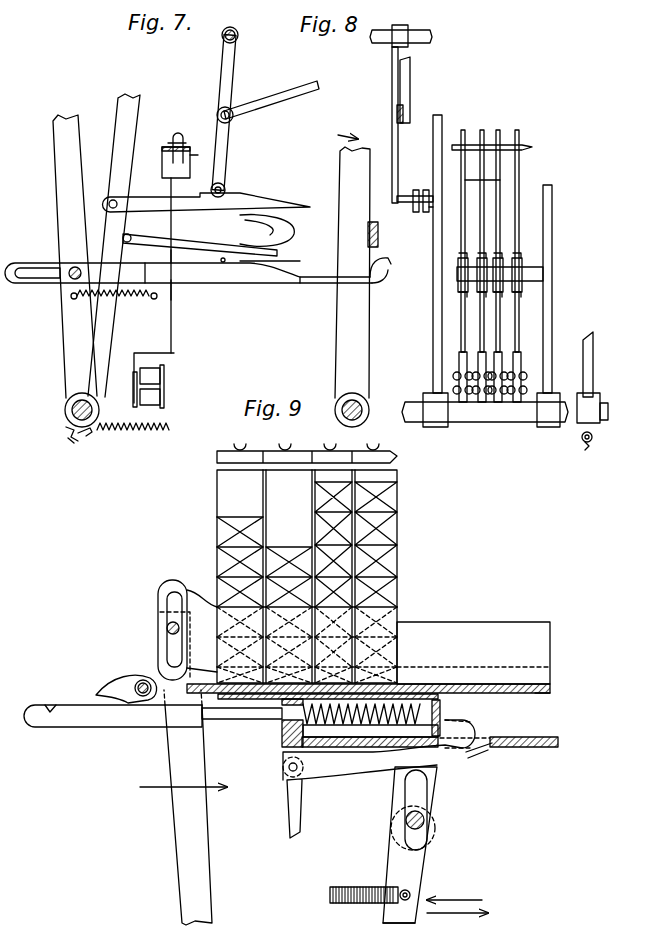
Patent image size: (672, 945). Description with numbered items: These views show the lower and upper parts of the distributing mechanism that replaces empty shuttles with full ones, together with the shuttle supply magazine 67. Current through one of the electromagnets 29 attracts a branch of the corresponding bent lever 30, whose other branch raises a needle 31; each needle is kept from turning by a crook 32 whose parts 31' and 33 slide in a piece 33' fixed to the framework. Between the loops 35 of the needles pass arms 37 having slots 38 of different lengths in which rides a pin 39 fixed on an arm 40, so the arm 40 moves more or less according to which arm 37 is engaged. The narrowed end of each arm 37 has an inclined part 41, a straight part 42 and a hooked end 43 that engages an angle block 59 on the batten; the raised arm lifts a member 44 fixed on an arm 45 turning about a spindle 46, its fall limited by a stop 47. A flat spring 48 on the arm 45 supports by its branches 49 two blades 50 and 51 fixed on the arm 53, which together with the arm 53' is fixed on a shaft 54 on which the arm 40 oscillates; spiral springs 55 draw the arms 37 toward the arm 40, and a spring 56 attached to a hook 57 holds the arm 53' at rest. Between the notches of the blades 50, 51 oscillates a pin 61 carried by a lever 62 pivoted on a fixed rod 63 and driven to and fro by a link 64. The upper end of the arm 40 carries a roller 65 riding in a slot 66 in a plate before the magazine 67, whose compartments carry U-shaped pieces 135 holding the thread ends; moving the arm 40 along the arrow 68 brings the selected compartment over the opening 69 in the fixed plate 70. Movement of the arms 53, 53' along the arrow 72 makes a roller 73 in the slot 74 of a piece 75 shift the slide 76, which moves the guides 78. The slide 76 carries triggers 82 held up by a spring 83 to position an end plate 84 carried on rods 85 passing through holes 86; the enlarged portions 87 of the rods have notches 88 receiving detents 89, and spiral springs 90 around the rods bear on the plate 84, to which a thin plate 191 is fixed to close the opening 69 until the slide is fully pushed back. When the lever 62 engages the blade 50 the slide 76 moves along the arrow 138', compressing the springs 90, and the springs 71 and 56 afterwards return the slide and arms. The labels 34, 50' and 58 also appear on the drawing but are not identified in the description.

In FIG. 7, the electromagnet 29 is at (152, 376).
In FIG. 8, the electromagnet 29 is at (522, 390).
In FIG. 7, the bent lever 30 is at (136, 353).
In FIG. 8, the bent lever 30 is at (459, 355).
In FIG. 7, the needle 31 is at (188, 250).
In FIG. 8, the needle 31 is at (482, 180).
In FIG. 7, the part of crook 31' is at (163, 156).
In FIG. 7, the crook 32 is at (180, 133).
In FIG. 8, the crook 32 is at (490, 230).
In FIG. 7, the part of crook 33 is at (203, 146).
In FIG. 7, the piece fixed to the framework 33' is at (163, 135).
In FIG. 8, the piece fixed to the framework 33' is at (507, 146).
In FIG. 7, the clip 34 is at (173, 296).
In FIG. 8, the clip 34 is at (482, 296).
In FIG. 7, the loop 35 is at (173, 262).
In FIG. 8, the loop 35 is at (478, 255).
In FIG. 7, the arm 37 is at (149, 272).
In FIG. 8, the arm 37 is at (522, 283).
In FIG. 7, the slot 38 is at (30, 265).
In FIG. 7, the pin 39 is at (81, 273).
In FIG. 8, the pin 39 is at (528, 267).
In FIG. 7, the arm 40 is at (75, 256).
In FIG. 8, the arm 40 is at (552, 340).
In FIG. 9, the arm 40 is at (199, 807).
In FIG. 7, the inclined part 41 is at (278, 280).
In FIG. 7, the straight part 42 is at (305, 284).
In FIG. 7, the hooked end 43 is at (391, 262).
In FIG. 7, the member 44 is at (285, 261).
In FIG. 7, the arm 45 is at (190, 240).
In FIG. 7, the spindle 46 is at (131, 236).
In FIG. 7, the stop 47 is at (223, 262).
In FIG. 7, the flat spring 48 is at (292, 228).
In FIG. 7, the branch 49 is at (257, 226).
In FIG. 7, the blade 50 is at (208, 191).
In FIG. 8, the blade 50 is at (415, 213).
In FIG. 8, the pin 50' is at (409, 189).
In FIG. 8, the blade 51 is at (433, 207).
In FIG. 7, the arm 53 is at (114, 245).
In FIG. 8, the arm 53 is at (445, 271).
In FIG. 9, the arm 53 is at (399, 913).
In FIG. 8, the arm 53' is at (587, 377).
In FIG. 7, the shaft 54 is at (92, 407).
In FIG. 8, the shaft 54 is at (495, 422).
In FIG. 7, the spiral spring 55 is at (125, 300).
In FIG. 7, the spring 56 is at (120, 437).
In FIG. 8, the spring 56 is at (585, 446).
In FIG. 7, the hook 57 is at (70, 440).
In FIG. 8, the hook 57 is at (582, 437).
In FIG. 7, the spring 58 is at (169, 428).
In FIG. 8, the angle block 59 is at (378, 238).
In FIG. 7, the pin 61 is at (224, 185).
In FIG. 8, the pin 61 is at (425, 190).
In FIG. 7, the lever 62 is at (228, 140).
In FIG. 8, the lever 62 is at (392, 98).
In FIG. 7, the fixed rod 63 is at (238, 35).
In FIG. 8, the fixed rod 63 is at (407, 35).
In FIG. 7, the link 64 is at (271, 100).
In FIG. 8, the link 64 is at (410, 83).
In FIG. 9, the roller 65 is at (167, 628).
In FIG. 9, the slot 66 is at (175, 592).
In FIG. 9, the shuttle supply magazine 67 is at (408, 588).
In FIG. 9, the arrow 68 is at (183, 775).
In FIG. 9, the opening 69 is at (385, 685).
In FIG. 9, the plate 70 is at (540, 693).
In FIG. 9, the spring 71 is at (340, 887).
In FIG. 9, the arrow 72 is at (454, 890).
In FIG. 9, the roller 73 is at (424, 820).
In FIG. 9, the slot 74 is at (410, 840).
In FIG. 9, the piece 75 is at (397, 793).
In FIG. 9, the slide 76 is at (538, 737).
In FIG. 9, the guide 78 is at (473, 653).
In FIG. 9, the trigger 82 is at (466, 725).
In FIG. 9, the spring 83 is at (481, 757).
In FIG. 9, the end plate 84 is at (440, 706).
In FIG. 9, the rod 85 is at (222, 719).
In FIG. 9, the hole 86 is at (288, 705).
In FIG. 9, the enlarged portion 87 is at (113, 716).
In FIG. 9, the notch 88 is at (50, 710).
In FIG. 9, the detent 89 is at (131, 670).
In FIG. 9, the spiral spring 90 is at (370, 720).
In FIG. 9, the U-shaped piece 135 is at (307, 445).
In FIG. 8, the arrow 138' is at (340, 127).
In FIG. 9, the arrow 138' is at (457, 922).
In FIG. 9, the thin plate 191 is at (420, 694).